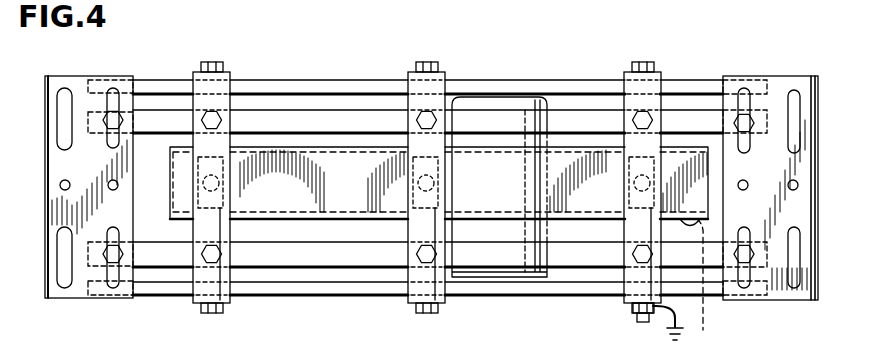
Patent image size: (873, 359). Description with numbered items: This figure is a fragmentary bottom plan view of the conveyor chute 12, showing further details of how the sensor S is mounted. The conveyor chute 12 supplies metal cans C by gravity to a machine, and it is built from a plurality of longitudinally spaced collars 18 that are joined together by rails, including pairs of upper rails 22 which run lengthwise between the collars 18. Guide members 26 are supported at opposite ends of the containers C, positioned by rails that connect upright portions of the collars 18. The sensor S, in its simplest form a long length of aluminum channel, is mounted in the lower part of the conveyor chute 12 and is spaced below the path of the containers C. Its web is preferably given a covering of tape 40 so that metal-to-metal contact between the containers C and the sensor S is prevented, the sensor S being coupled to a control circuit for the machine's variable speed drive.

The conveyor chute 12 is at (393, 50).
The collars 18 is at (230, 72).
The upper rails 22 is at (158, 122).
The guide members 26 is at (283, 83).
The tape 40 is at (351, 197).
The metal cans C is at (543, 96).
The sensor S is at (370, 213).